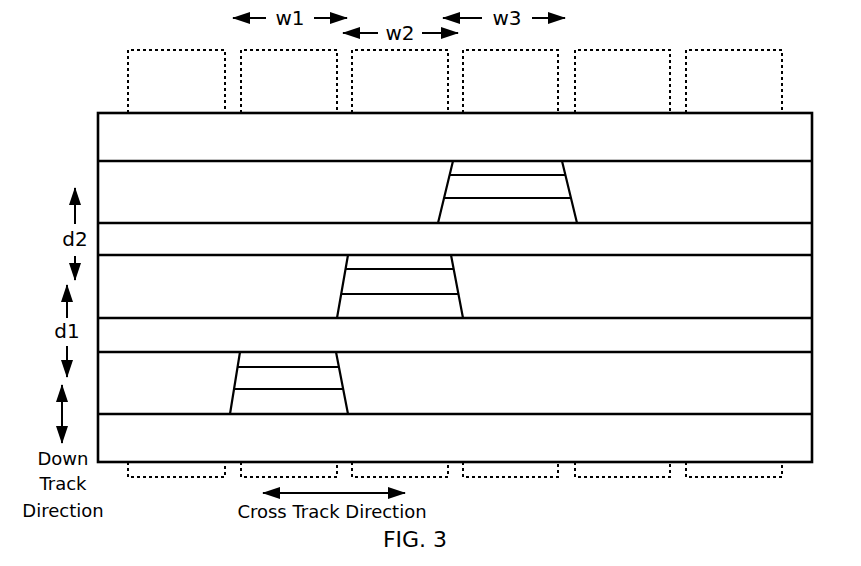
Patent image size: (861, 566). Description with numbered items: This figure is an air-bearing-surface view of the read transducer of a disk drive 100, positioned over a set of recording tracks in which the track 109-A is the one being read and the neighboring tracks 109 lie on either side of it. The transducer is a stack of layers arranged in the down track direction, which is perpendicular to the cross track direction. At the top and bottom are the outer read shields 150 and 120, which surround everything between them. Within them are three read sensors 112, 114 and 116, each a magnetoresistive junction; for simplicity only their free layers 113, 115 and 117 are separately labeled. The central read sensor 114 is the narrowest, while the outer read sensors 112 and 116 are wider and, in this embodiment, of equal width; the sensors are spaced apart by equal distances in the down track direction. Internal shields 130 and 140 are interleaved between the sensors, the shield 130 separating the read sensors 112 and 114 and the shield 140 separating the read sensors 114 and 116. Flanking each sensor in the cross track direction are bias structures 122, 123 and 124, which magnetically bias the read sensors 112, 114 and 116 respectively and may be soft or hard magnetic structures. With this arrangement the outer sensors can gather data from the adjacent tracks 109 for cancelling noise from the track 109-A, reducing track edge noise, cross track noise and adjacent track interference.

The disk drive 100 is at (110, 29).
The tracks 109 is at (455, 263).
The track 109-A is at (400, 81).
The read shield 150 is at (455, 142).
The bias structure 124 is at (455, 194).
The free layer 117 is at (507, 192).
The shield 140 is at (455, 241).
The bias structure 123 is at (455, 288).
The free layer 115 is at (400, 286).
The shield 130 is at (455, 337).
The bias structure 122 is at (455, 385).
The free layer 113 is at (289, 383).
The read shield 120 is at (552, 438).
The read sensor 116 is at (528, 150).
The read sensor 114 is at (405, 330).
The read sensor 112 is at (268, 425).